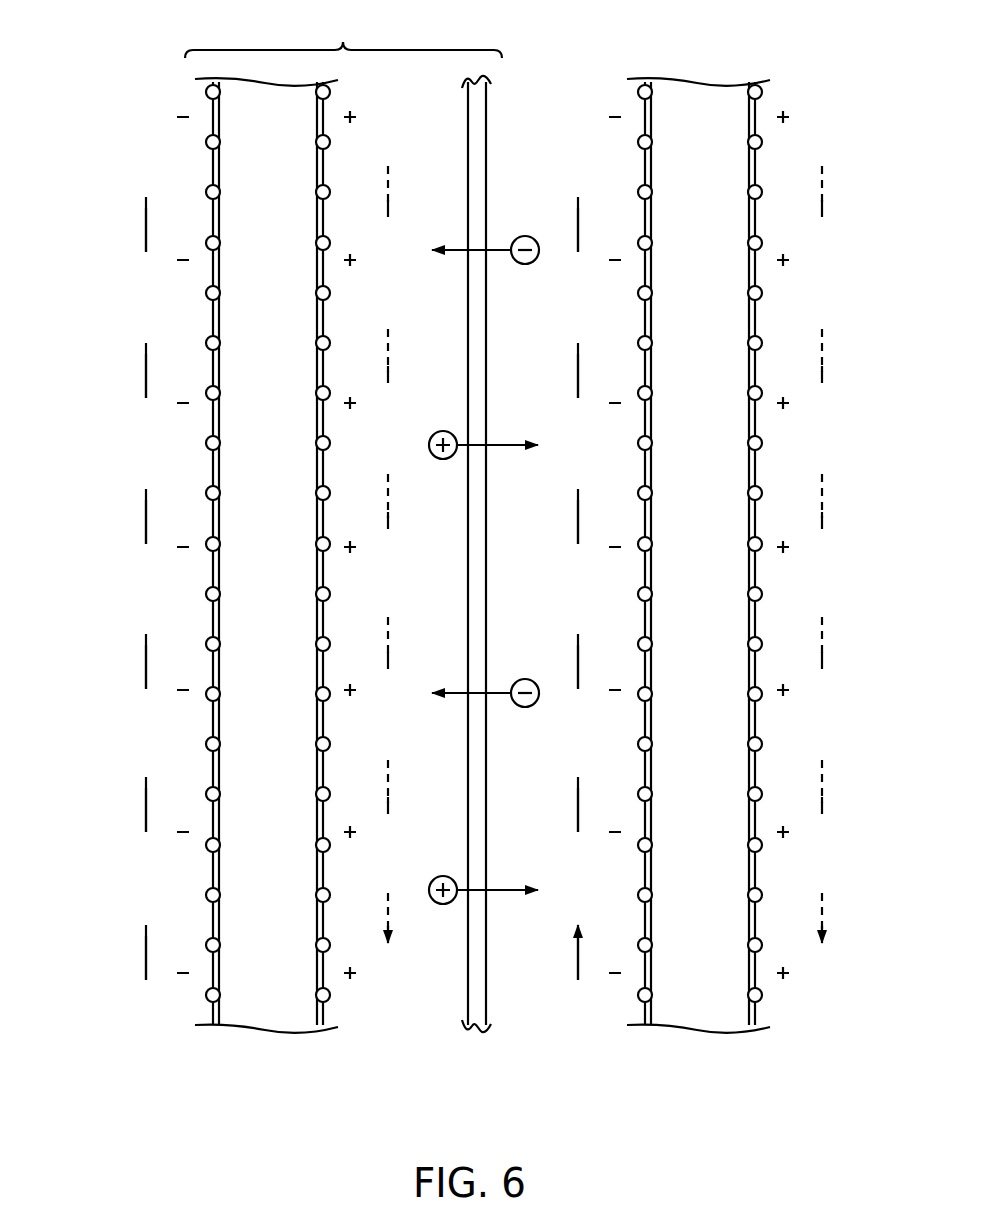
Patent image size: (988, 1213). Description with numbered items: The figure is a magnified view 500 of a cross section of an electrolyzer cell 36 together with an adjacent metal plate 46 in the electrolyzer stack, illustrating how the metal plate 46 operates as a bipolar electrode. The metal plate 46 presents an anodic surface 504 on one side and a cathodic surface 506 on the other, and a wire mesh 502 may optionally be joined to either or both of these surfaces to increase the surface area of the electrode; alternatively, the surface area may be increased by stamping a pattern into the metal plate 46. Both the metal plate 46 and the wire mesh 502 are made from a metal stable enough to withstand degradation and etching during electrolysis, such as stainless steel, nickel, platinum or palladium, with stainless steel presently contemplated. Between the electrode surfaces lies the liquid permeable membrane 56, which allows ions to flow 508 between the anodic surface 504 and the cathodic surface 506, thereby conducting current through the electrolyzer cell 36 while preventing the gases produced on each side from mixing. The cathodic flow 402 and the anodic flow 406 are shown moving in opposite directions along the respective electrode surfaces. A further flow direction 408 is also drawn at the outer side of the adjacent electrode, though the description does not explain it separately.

The electrolyzer cell 36 is at (343, 34).
The metal plate 46 is at (272, 1010).
The liquid permeable membrane 56 is at (481, 1030).
The cathodic flow 402 is at (146, 375).
The anodic flow 406 is at (390, 350).
The charged particle flow direction 408 is at (826, 347).
The magnified view 500 is at (138, 80).
The wire mesh 502 is at (208, 995).
The anodic surface 504 is at (359, 104).
The cathodic surface 506 is at (185, 850).
The ion flow 508 is at (498, 690).